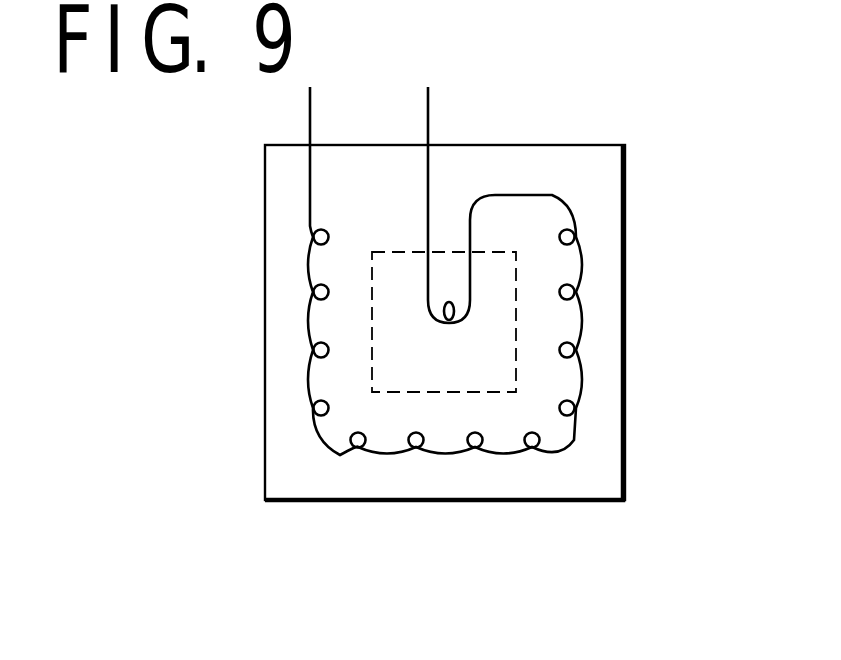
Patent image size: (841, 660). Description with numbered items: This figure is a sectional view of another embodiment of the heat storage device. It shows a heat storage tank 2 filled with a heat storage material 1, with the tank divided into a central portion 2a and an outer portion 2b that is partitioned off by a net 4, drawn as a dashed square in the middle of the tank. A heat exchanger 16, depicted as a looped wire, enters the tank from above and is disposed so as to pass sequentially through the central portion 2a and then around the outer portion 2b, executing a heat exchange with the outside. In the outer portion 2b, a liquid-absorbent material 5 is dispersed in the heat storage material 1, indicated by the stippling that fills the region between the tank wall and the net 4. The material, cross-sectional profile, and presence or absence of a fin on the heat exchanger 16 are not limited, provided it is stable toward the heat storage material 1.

The heat storage material 1 is at (610, 190).
The heat storage tank 2 is at (627, 268).
The central portion 2a is at (448, 368).
The outer portion 2b is at (598, 333).
The net 4 is at (372, 342).
The liquid-absorbent material 5 is at (320, 465).
The heat exchanger 16 is at (430, 125).